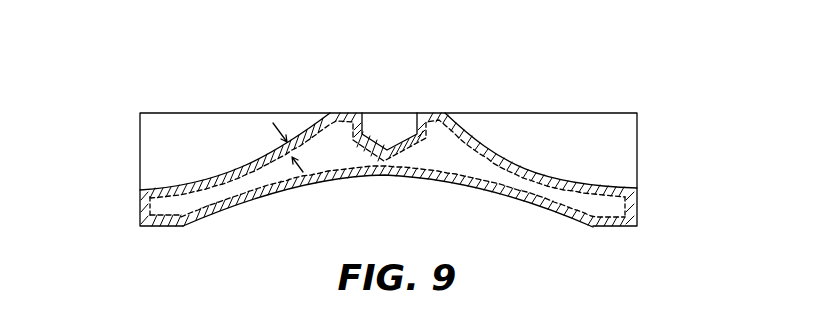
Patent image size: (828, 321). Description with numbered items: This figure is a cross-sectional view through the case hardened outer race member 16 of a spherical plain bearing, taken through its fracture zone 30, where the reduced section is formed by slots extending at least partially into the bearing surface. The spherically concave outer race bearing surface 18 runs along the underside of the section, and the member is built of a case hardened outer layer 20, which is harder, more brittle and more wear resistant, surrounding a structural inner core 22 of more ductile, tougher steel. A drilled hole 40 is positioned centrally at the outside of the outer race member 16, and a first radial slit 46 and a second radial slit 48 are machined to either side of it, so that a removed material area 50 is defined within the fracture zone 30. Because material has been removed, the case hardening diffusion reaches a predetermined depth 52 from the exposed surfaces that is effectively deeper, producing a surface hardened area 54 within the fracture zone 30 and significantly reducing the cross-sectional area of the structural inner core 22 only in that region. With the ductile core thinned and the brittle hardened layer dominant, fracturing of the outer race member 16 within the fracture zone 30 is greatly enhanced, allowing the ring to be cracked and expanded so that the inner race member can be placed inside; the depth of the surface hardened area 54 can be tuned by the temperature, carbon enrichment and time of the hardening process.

The outer race member 16 is at (592, 112).
The outer race bearing surface 18 is at (370, 177).
The case hardened outer layer 20 is at (637, 226).
The structural inner core 22 is at (336, 140).
The fracture zone 30 is at (227, 113).
The drilled hole 40 is at (388, 127).
The first radial slit 46 is at (207, 150).
The second radial slit 48 is at (593, 151).
The removed material area 50 is at (495, 112).
The predetermined depth 52 is at (296, 142).
The surface hardened area 54 is at (143, 208).